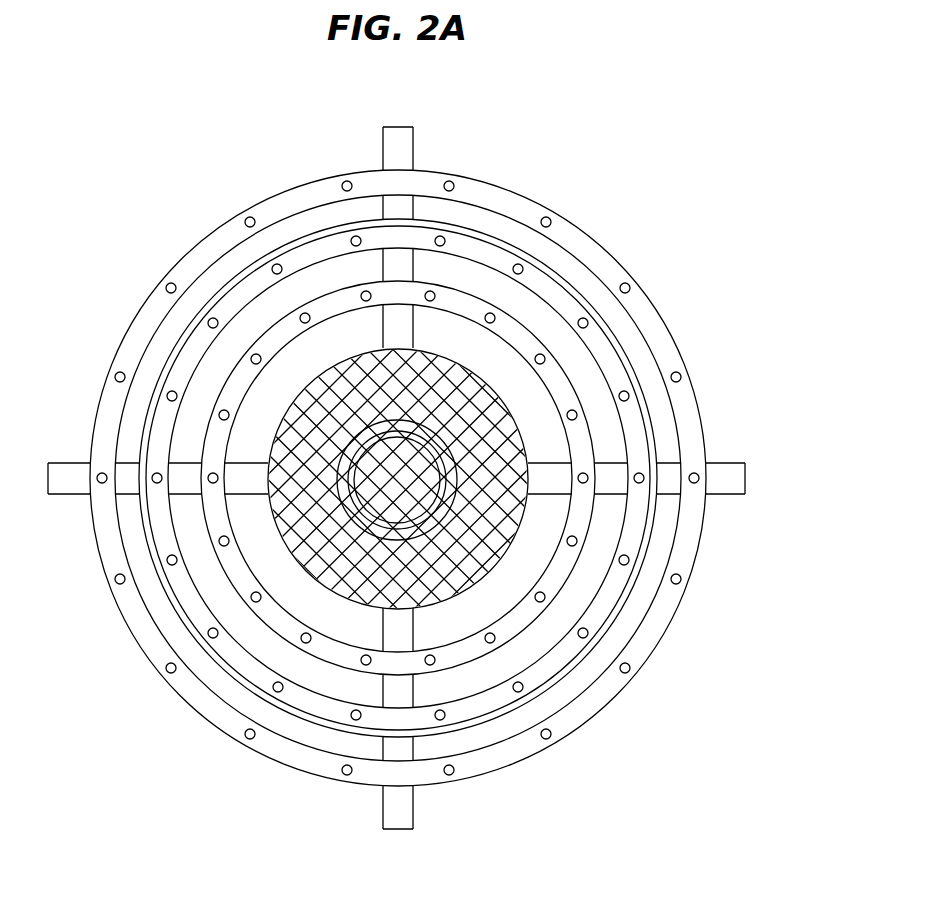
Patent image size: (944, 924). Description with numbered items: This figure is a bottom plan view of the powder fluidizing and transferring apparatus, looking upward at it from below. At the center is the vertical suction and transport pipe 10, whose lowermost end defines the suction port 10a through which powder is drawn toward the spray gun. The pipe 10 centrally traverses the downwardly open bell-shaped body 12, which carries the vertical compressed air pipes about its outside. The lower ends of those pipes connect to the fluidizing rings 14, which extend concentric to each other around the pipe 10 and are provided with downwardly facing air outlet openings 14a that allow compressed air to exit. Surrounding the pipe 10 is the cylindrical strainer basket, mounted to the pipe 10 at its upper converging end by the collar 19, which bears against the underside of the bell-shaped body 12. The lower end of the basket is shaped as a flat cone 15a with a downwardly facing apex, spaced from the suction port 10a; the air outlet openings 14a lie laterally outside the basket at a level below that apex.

The vertical suction and transport pipe 10 is at (398, 457).
The suction port 10a is at (442, 477).
The bell-shaped body 12 is at (634, 593).
The fluidizing rings 14 is at (660, 308).
The air outlet openings 14a is at (352, 242).
The flat cone 15a is at (297, 471).
The collar 19 is at (413, 522).